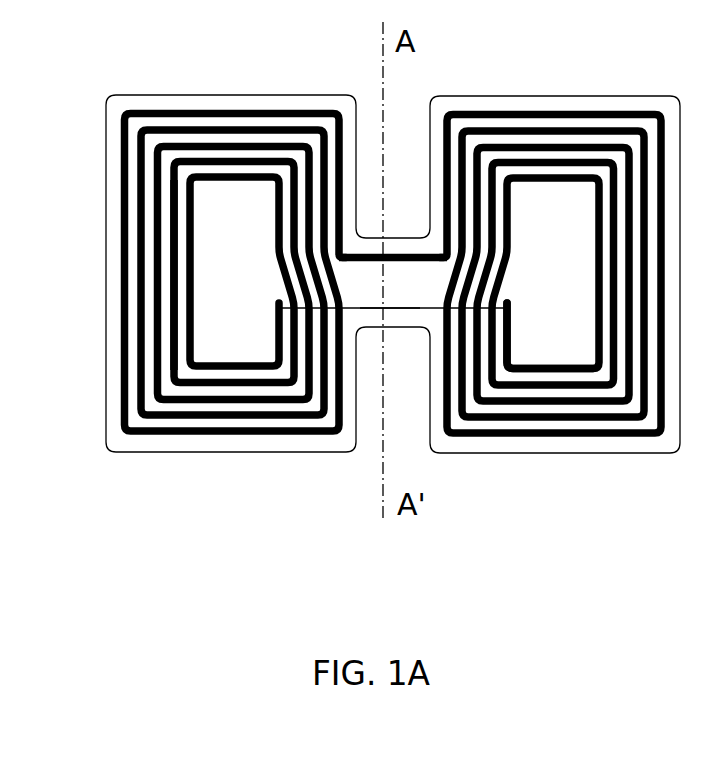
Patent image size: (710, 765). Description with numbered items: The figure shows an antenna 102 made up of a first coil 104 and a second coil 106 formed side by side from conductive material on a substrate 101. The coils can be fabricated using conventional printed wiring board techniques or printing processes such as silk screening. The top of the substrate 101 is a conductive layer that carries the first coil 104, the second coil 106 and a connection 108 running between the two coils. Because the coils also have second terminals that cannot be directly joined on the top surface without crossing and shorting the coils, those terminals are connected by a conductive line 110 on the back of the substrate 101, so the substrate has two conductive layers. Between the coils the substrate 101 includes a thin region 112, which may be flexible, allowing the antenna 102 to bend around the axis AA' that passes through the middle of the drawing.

The substrate 101 is at (536, 95).
The antenna 102 is at (235, 93).
The first coil 104 is at (175, 248).
The second coil 106 is at (527, 366).
The connection 108 is at (418, 255).
The conductive line 110 is at (355, 308).
The thin region 112 is at (408, 294).